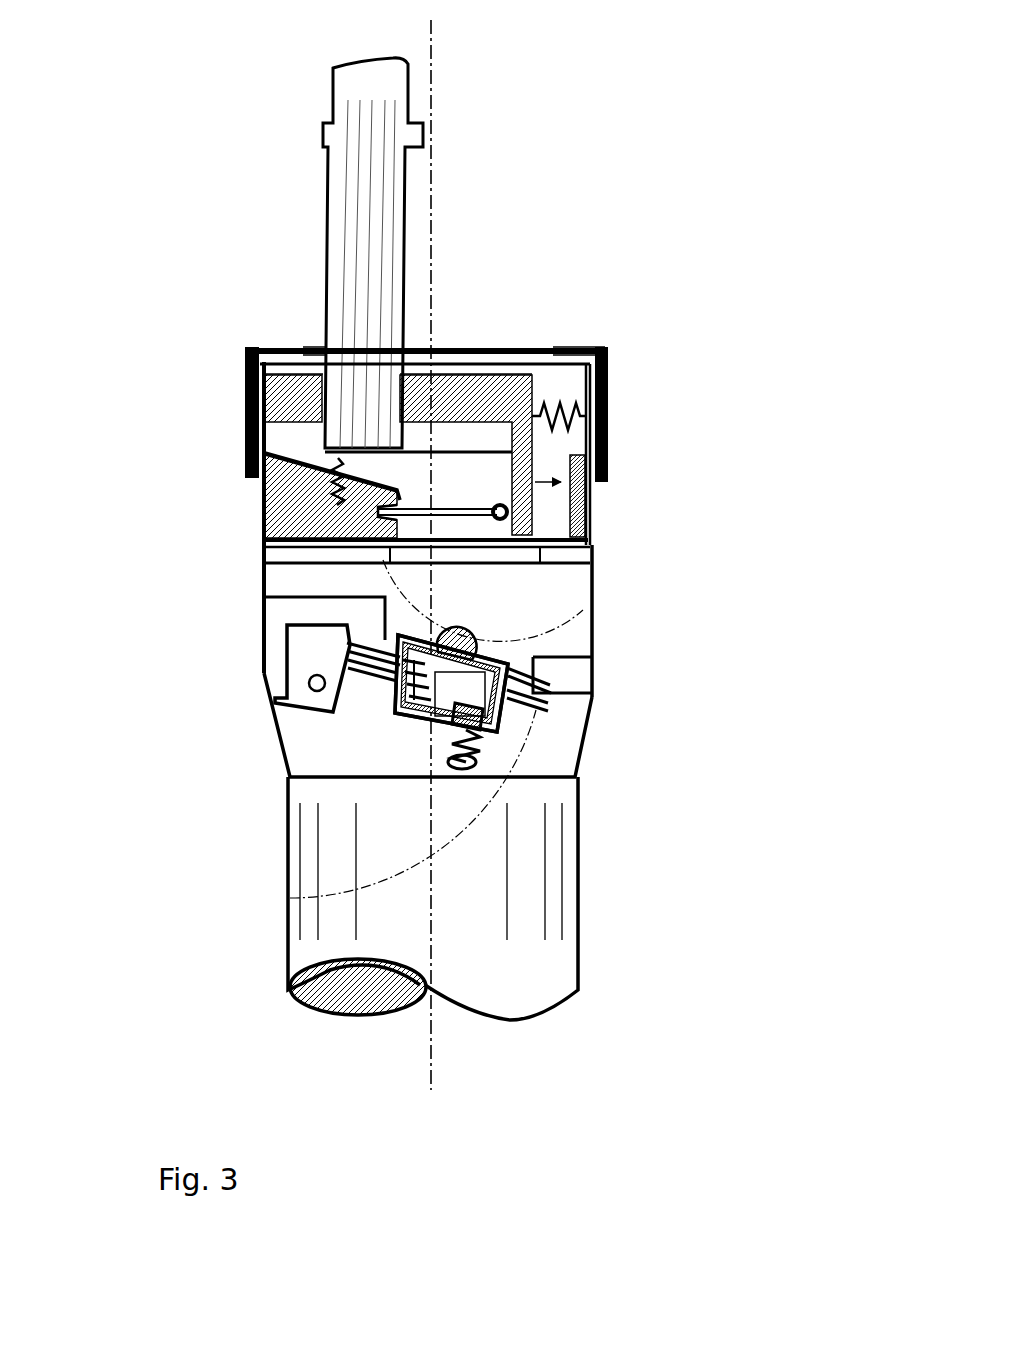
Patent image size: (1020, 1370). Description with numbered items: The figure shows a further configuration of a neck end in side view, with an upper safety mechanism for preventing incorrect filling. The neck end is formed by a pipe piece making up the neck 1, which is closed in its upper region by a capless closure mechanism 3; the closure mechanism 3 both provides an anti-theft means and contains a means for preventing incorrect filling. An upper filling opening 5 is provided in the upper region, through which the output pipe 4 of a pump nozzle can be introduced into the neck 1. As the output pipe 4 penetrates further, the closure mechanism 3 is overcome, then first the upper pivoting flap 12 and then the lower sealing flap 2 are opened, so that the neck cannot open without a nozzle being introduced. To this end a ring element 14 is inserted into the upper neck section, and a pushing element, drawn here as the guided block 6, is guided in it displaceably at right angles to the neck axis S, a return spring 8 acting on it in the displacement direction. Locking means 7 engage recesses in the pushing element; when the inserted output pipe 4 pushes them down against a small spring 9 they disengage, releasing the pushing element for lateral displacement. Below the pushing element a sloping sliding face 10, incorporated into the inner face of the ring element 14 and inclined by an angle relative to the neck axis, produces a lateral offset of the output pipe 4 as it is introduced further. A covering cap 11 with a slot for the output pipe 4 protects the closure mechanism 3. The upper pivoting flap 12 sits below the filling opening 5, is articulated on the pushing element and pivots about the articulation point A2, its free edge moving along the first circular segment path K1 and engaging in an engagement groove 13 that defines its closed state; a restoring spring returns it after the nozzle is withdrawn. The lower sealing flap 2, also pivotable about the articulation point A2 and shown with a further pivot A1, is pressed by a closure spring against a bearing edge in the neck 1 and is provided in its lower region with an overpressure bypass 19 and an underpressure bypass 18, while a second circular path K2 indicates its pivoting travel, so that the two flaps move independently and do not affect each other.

The neck 1 is at (600, 745).
The lower sealing flap 2 is at (478, 694).
The closure mechanism 3 is at (256, 501).
The output pipe 4 is at (400, 234).
The upper filling opening 5 is at (500, 348).
The upper guide block 6 is at (520, 380).
The locking means 7 is at (333, 457).
The return spring 8 is at (558, 415).
The small spring 9 is at (322, 506).
The sliding face 10 is at (258, 480).
The covering cap 11 is at (608, 358).
The upper pivoting flap 12 is at (432, 508).
The engagement groove 13 is at (377, 518).
The ring element 14 is at (578, 498).
The underpressure bypass 18 is at (413, 727).
The overpressure bypass 19 is at (455, 735).
The first pivot axis A1 is at (507, 514).
The articulation point A2 is at (310, 681).
The first circular segment path K1 is at (590, 628).
The second circle path K2 is at (523, 797).
The axis of symmetry S is at (435, 72).